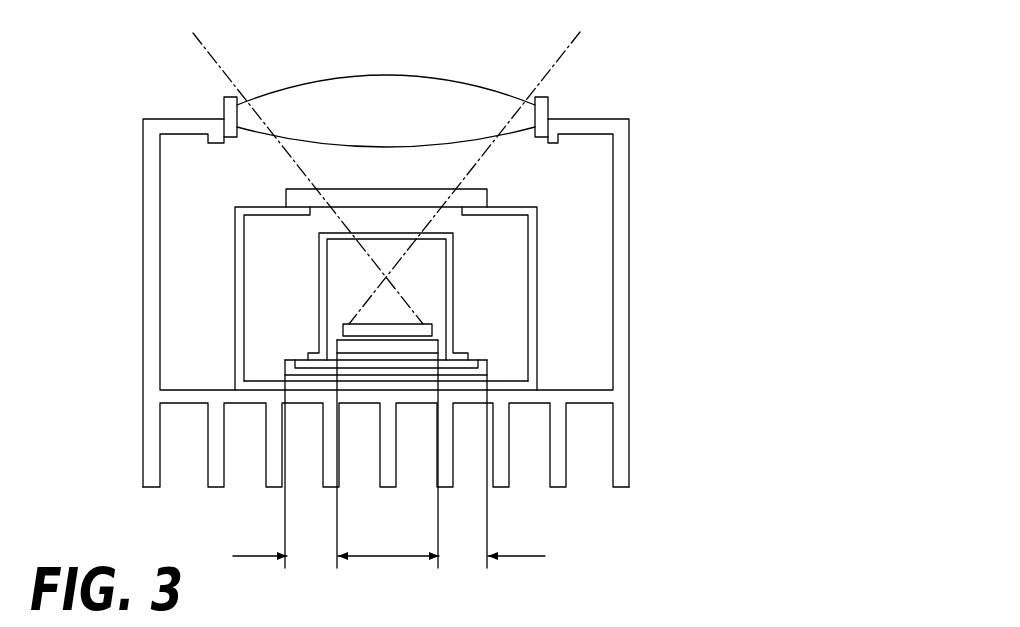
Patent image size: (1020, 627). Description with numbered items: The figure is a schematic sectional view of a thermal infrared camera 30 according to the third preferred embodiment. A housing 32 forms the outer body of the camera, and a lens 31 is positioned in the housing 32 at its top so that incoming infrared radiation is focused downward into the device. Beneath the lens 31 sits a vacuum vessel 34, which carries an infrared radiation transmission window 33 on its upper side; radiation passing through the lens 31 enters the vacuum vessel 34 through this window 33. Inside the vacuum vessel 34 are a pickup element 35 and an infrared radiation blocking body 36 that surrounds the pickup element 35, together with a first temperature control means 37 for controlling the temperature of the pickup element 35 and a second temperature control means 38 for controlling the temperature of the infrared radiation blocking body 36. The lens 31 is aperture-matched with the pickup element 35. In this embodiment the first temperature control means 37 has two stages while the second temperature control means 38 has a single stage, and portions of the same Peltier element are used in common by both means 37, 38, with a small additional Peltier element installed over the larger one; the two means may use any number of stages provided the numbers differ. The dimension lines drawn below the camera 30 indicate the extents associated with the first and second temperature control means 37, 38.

The thermal infrared camera 30 is at (646, 43).
The lens 31 is at (435, 105).
The housing 32 is at (623, 145).
The infrared radiation transmission window 33 is at (476, 192).
The vacuum vessel 34 is at (537, 250).
The pickup element 35 is at (423, 327).
The infrared radiation blocking body 36 is at (453, 330).
The first temperature control means 37 is at (400, 556).
The second temperature control means 38 is at (312, 557).